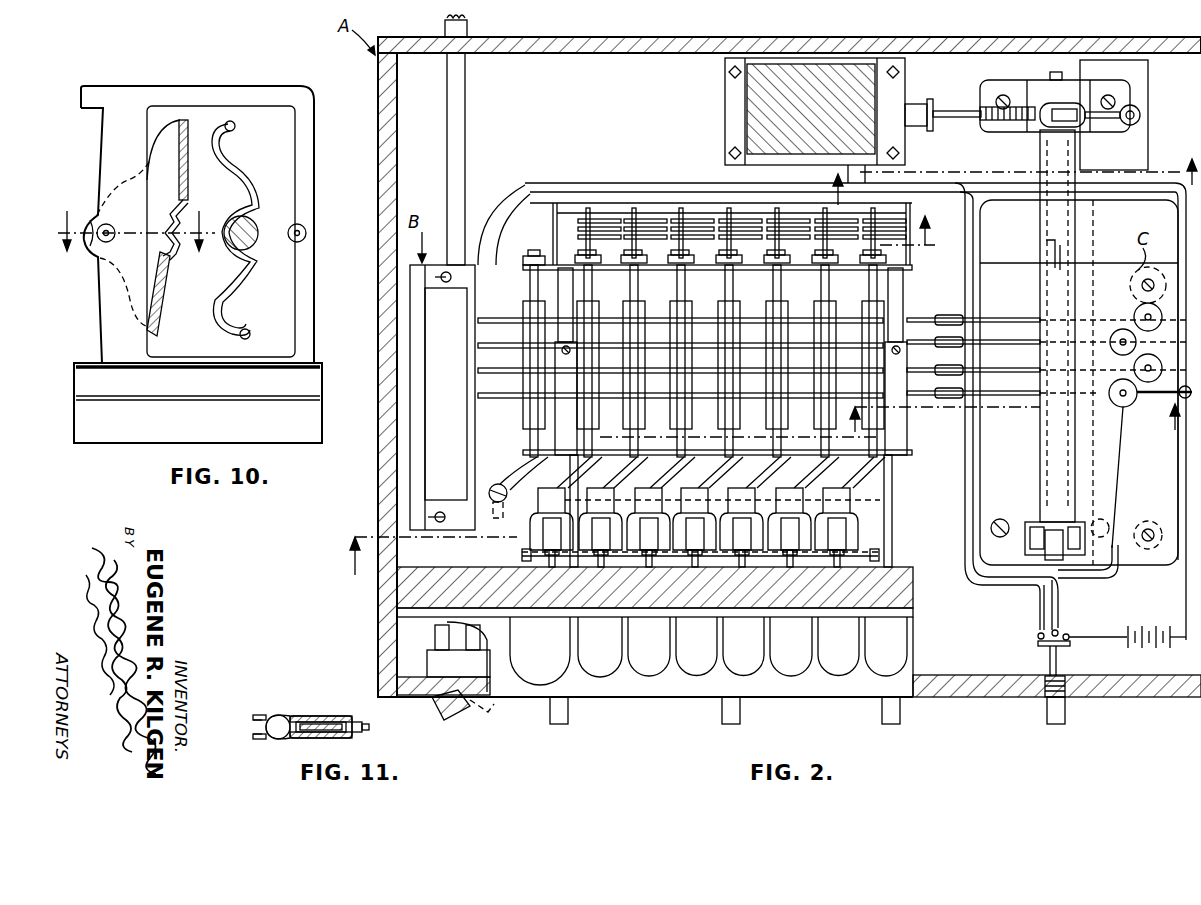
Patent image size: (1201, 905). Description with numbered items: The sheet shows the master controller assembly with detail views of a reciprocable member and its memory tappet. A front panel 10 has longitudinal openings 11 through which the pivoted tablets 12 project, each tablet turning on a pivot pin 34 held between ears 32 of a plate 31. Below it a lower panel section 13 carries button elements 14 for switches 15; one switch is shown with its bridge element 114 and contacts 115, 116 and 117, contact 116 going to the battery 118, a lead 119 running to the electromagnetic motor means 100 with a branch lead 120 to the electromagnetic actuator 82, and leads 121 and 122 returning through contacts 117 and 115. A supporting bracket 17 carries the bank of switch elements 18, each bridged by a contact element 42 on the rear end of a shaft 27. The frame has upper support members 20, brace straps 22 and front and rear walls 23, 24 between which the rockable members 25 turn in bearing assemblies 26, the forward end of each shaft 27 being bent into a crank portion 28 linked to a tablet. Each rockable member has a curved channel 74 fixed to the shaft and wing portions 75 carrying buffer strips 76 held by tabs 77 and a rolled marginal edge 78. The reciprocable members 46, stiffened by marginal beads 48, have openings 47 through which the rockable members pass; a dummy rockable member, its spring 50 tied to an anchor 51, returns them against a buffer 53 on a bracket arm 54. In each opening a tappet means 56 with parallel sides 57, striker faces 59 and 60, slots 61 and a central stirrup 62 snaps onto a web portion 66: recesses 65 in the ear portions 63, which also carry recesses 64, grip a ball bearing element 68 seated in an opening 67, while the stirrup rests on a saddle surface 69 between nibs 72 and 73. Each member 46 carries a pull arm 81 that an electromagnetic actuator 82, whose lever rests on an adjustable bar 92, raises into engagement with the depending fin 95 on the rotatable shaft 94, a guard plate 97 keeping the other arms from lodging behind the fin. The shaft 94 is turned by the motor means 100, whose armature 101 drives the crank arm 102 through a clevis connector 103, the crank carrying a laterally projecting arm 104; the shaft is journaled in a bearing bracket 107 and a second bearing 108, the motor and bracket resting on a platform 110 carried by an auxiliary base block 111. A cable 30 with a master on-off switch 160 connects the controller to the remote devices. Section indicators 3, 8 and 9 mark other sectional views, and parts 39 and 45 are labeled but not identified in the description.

In FIG. 2, the front panel 10 is at (870, 612).
In FIG. 2, the tablets 12 is at (648, 688).
In FIG. 2, the lower panel section 13 is at (932, 698).
In FIG. 2, the button actuating elements 14 is at (558, 724).
In FIG. 2, the switches 15 is at (1028, 640).
In FIG. 2, the supporting bracket 17 is at (567, 198).
In FIG. 2, the switch elements 18 is at (602, 216).
In FIG. 2, the upper support members 20 is at (560, 262).
In FIG. 2, the frame brace straps 22 is at (566, 345).
In FIG. 2, the front wall 23 is at (620, 454).
In FIG. 2, the rear wall 24 is at (618, 303).
In FIG. 2, the rockable members 25 is at (712, 300).
In FIG. 2, the bearing assemblies 26 is at (698, 275).
In FIG. 2, the shaft 27 is at (640, 282).
In FIG. 10, the shaft 27 is at (258, 226).
In FIG. 2, the crank portion 28 is at (716, 466).
In FIG. 2, the cable 30 is at (522, 190).
In FIG. 2, the plate 31 is at (470, 574).
In FIG. 2, the ears 32 is at (522, 554).
In FIG. 2, the pivot pin 34 is at (880, 557).
In FIG. 2, the contact blocks 39 is at (712, 522).
In FIG. 2, the contact element 42 is at (588, 208).
In FIG. 2, the switch bases 45 is at (655, 182).
In FIG. 2, the reciprocable members 46 is at (498, 322).
In FIG. 10, the reciprocable members 46 is at (122, 84).
In FIG. 10, the openings 47 is at (268, 104).
In FIG. 10, the marginal beads 48 is at (316, 378).
In FIG. 2, the spring 50 is at (490, 492).
In FIG. 2, the anchor 51 is at (492, 510).
In FIG. 2, the buffer 53 is at (478, 386).
In FIG. 2, the buffer bracket arm 54 is at (472, 435).
In FIG. 10, the tappet means 56 is at (168, 120).
In FIG. 11, the tappet means 56 is at (330, 713).
In FIG. 11, the side walls 57 is at (300, 715).
In FIG. 10, the upper striker face 59 is at (196, 122).
In FIG. 10, the lower striker face 60 is at (162, 316).
In FIG. 10, the slots 61 is at (177, 150).
In FIG. 10, the stirrup 62 is at (166, 216).
In FIG. 11, the stirrup 62 is at (355, 733).
In FIG. 10, the ear portions 63 is at (95, 256).
In FIG. 11, the ear portions 63 is at (262, 714).
In FIG. 10, the spherical recesses 64 is at (122, 200).
In FIG. 11, the spherical recesses 65 is at (277, 714).
In FIG. 10, the web portion 66 is at (102, 310).
In FIG. 11, the web portion 66 is at (330, 739).
In FIG. 10, the opening 67 is at (100, 242).
In FIG. 11, the opening 67 is at (254, 736).
In FIG. 10, the ball bearing element 68 is at (110, 238).
In FIG. 11, the ball bearing element 68 is at (254, 718).
In FIG. 10, the saddle surface 69 is at (165, 240).
In FIG. 11, the saddle surface 69 is at (340, 722).
In FIG. 10, the nib 72 is at (180, 244).
In FIG. 11, the nib 72 is at (369, 727).
In FIG. 10, the nib 73 is at (196, 198).
In FIG. 10, the curved channel 74 is at (246, 200).
In FIG. 10, the wing portion 75 is at (222, 150).
In FIG. 10, the buffer strip 76 is at (228, 124).
In FIG. 10, the projecting tabs 77 is at (250, 190).
In FIG. 10, the rolled marginal edge 78 is at (243, 372).
In FIG. 2, the pull arm 81 is at (990, 330).
In FIG. 2, the electromagnetic actuator 82 is at (1148, 318).
In FIG. 2, the adjustable bar 92 is at (1102, 420).
In FIG. 2, the rotatable shaft 94 is at (1072, 208).
In FIG. 2, the fin member 95 is at (1055, 438).
In FIG. 2, the guard plate 97 is at (1040, 425).
In FIG. 2, the electromagnetic motor means 100 is at (835, 72).
In FIG. 2, the armature 101 is at (926, 110).
In FIG. 2, the crank arm 102 is at (1062, 128).
In FIG. 2, the clevis connector 103 is at (1025, 122).
In FIG. 2, the laterally projecting arm 104 is at (1120, 126).
In FIG. 2, the bearing bracket 107 is at (1072, 88).
In FIG. 2, the second bearing 108 is at (1032, 522).
In FIG. 2, the platform 110 is at (1146, 88).
In FIG. 2, the auxiliary base block 111 is at (1130, 150).
In FIG. 2, the bridge element 114 is at (1036, 645).
In FIG. 2, the switch contact 115 is at (1040, 633).
In FIG. 2, the switch contact 116 is at (1069, 638).
In FIG. 2, the switch contact 117 is at (1058, 631).
In FIG. 2, the battery 118 is at (1140, 632).
In FIG. 2, the lead 119 is at (1152, 185).
In FIG. 2, the branch lead 120 is at (1134, 400).
In FIG. 2, the lead 121 is at (975, 208).
In FIG. 2, the lead 122 is at (1118, 462).
In FIG. 2, the master on-off switch 160 is at (440, 668).
In FIG. 2, the section line 3 is at (645, 400).
In FIG. 2, the section line 8 is at (1009, 426).
In FIG. 2, the section line 9 is at (1007, 179).
In FIG. 10, the longitudinal openings 11 is at (136, 220).